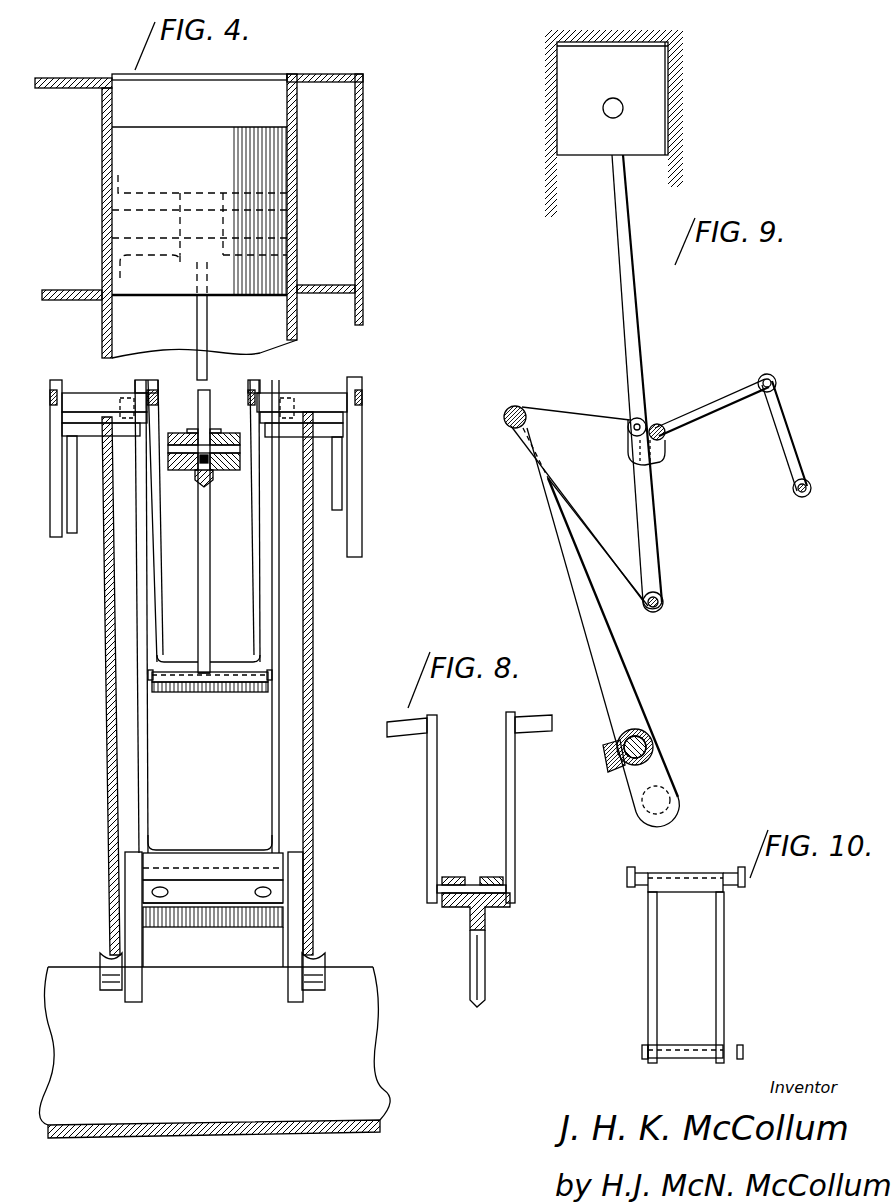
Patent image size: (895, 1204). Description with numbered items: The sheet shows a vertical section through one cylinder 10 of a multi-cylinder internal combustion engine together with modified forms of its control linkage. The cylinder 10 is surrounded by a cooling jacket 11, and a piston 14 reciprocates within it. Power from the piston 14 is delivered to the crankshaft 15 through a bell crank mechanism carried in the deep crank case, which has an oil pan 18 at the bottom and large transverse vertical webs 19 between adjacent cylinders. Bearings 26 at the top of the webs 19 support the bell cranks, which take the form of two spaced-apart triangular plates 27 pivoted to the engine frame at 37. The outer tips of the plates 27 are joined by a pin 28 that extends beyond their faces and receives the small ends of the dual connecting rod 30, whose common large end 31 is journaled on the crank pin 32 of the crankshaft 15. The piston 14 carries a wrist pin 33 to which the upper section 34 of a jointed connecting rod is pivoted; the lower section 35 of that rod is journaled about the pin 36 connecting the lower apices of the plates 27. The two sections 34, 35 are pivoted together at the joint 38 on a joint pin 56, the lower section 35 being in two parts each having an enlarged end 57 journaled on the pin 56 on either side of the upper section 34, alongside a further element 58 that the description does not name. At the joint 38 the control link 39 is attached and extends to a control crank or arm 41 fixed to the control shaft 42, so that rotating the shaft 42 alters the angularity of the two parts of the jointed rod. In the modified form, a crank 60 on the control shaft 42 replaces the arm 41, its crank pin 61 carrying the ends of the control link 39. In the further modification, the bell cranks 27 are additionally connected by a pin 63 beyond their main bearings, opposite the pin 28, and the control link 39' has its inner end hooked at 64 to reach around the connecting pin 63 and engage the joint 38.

In FIG. 4, the cylinder 10 is at (297, 123).
In FIG. 4, the cooling jacket 11 is at (348, 155).
In FIG. 4, the piston 14 is at (218, 137).
In FIG. 4, the crankshaft 15 is at (108, 988).
In FIG. 9, the crankshaft 15 is at (680, 790).
In FIG. 4, the oil pan 18 is at (90, 1135).
In FIG. 4, the webs 19 is at (113, 725).
In FIG. 4, the bearings 26 is at (88, 397).
In FIG. 4, the triangular plates 27 is at (55, 512).
In FIG. 9, the triangular plates 27 is at (580, 493).
In FIG. 10, the triangular plates 27 is at (658, 965).
In FIG. 9, the pin 28 is at (508, 425).
In FIG. 4, the dual connecting rod 30 is at (73, 533).
In FIG. 9, the dual connecting rod 30 is at (558, 547).
In FIG. 4, the large end 31 is at (207, 863).
In FIG. 9, the large end 31 is at (650, 740).
In FIG. 4, the crank pin 32 is at (205, 913).
In FIG. 9, the crank pin 32 is at (640, 735).
In FIG. 4, the wrist pin 33 is at (198, 182).
In FIG. 4, the upper section 34 is at (205, 337).
In FIG. 4, the lower section 35 is at (217, 562).
In FIG. 4, the pin 36 is at (228, 687).
In FIG. 9, the pin 36 is at (663, 600).
In FIG. 4, the pivot 37 is at (128, 398).
In FIG. 10, the pivot 37 is at (633, 888).
In FIG. 4, the joint 38 is at (204, 440).
In FIG. 9, the joint 38 is at (633, 422).
In FIG. 8, the control link 39 is at (496, 968).
In FIG. 9, the control link 39' is at (712, 417).
In FIG. 9, the control crank 41 is at (795, 455).
In FIG. 9, the control shaft 42 is at (810, 487).
In FIG. 8, the control shaft 42 is at (398, 735).
In FIG. 4, the joint pin 56 is at (179, 455).
In FIG. 4, the enlarged end 57 is at (183, 693).
In FIG. 4, the nut 58 is at (233, 465).
In FIG. 8, the crank 60 is at (492, 807).
In FIG. 8, the crank pin 61 is at (460, 890).
In FIG. 9, the connecting pin 63 is at (658, 425).
In FIG. 10, the connecting pin 63 is at (683, 875).
In FIG. 9, the hook 64 is at (627, 450).